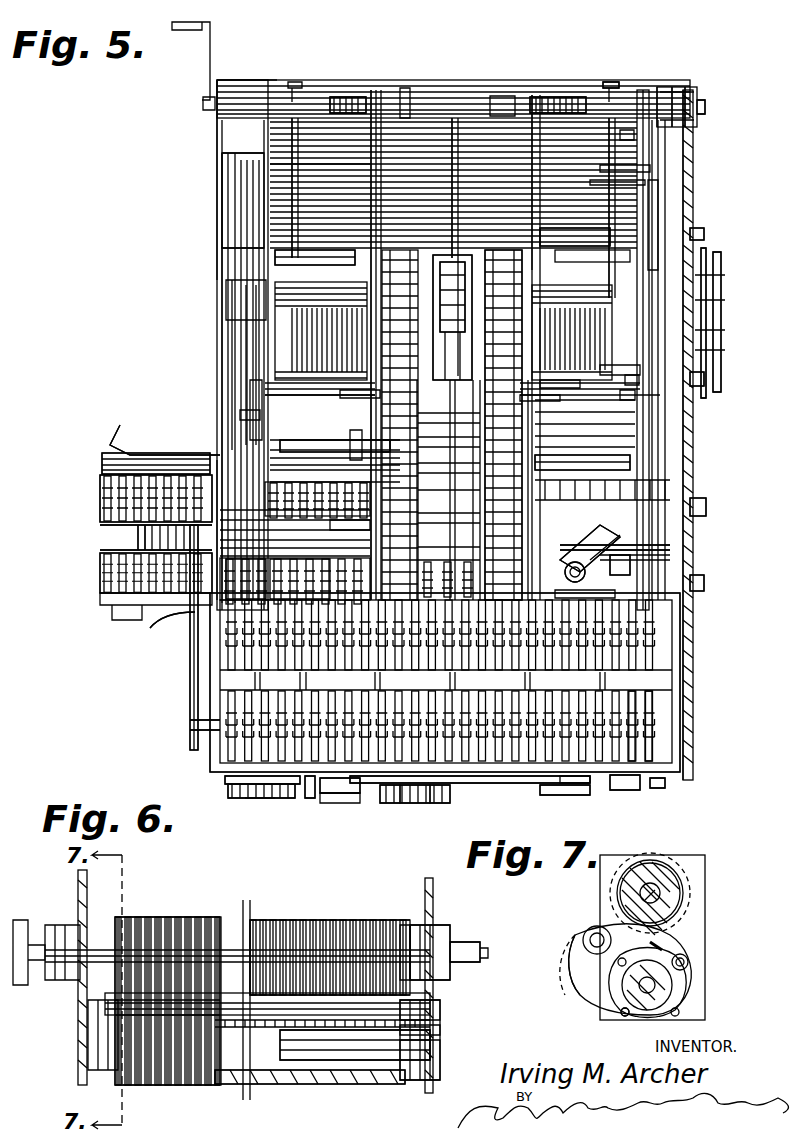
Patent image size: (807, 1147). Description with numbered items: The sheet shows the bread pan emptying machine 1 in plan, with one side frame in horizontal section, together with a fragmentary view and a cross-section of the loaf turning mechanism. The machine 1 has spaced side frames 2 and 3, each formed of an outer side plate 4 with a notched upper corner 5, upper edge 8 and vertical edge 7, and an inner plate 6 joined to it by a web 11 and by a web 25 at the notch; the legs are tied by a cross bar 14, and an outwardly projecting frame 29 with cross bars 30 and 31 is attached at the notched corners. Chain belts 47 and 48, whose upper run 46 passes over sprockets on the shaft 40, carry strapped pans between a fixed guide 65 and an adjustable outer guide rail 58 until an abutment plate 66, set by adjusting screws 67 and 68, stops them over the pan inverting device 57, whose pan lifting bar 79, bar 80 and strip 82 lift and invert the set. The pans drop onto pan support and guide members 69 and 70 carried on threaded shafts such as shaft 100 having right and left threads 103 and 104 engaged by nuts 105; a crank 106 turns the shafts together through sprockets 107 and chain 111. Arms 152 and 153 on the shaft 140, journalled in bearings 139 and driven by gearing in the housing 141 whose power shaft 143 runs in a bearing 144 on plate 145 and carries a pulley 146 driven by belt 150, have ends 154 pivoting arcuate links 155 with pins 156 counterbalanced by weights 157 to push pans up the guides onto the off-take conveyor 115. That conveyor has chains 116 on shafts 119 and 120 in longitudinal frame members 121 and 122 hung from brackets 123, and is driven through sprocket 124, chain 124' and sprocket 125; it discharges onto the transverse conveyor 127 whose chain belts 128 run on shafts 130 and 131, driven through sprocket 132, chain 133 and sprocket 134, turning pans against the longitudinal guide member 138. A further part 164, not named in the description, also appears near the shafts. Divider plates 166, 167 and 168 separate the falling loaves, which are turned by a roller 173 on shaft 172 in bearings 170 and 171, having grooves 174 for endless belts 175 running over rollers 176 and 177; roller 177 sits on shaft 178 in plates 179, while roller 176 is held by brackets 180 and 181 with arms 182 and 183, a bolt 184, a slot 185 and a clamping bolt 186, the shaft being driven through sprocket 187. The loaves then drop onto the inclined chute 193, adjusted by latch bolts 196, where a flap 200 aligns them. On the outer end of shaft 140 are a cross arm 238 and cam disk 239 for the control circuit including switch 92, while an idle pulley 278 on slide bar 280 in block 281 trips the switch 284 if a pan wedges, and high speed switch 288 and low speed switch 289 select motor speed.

In FIG. 5, the machine 1 is at (215, 125).
In FIG. 5, the side frame 2 is at (235, 80).
In FIG. 5, the side frame 3 is at (678, 90).
In FIG. 5, the outer side plate 4 is at (220, 152).
In FIG. 5, the notched upper corner 5 is at (665, 545).
In FIG. 5, the inner plate 6 is at (680, 453).
In FIG. 6, the inner plate 6 is at (80, 877).
In FIG. 5, the vertical edge 7 is at (622, 110).
In FIG. 5, the upper edge 8 is at (215, 198).
In FIG. 5, the web 11 is at (663, 92).
In FIG. 5, the cross bar 14 is at (505, 95).
In FIG. 5, the web 25 is at (220, 470).
In FIG. 5, the outwardly projecting frame 29 is at (678, 770).
In FIG. 5, the cross bar 30 is at (600, 580).
In FIG. 5, the cross bar 31 is at (655, 790).
In FIG. 5, the shaft 40 is at (140, 550).
In FIG. 5, the upper run 46 is at (125, 483).
In FIG. 5, the chain belt 47 is at (100, 497).
In FIG. 5, the chain belt 48 is at (100, 580).
In FIG. 5, the pan inverting device 57 is at (540, 465).
In FIG. 5, the outer guide rail 58 is at (160, 633).
In FIG. 5, the fixed guide 65 is at (125, 455).
In FIG. 5, the abutment plate 66 is at (630, 560).
In FIG. 5, the adjusting screw 67 is at (700, 505).
In FIG. 5, the adjusting screw 68 is at (698, 585).
In FIG. 5, the pan support and guide member 69 is at (378, 95).
In FIG. 5, the pan support and guide member 70 is at (535, 95).
In FIG. 5, the pan lifting bar 79 is at (350, 535).
In FIG. 5, the bar 80 is at (330, 460).
In FIG. 5, the strip 82 is at (357, 440).
In FIG. 5, the switch 92 is at (665, 548).
In FIG. 5, the shaft 100 is at (630, 105).
In FIG. 5, the right thread 103 is at (345, 95).
In FIG. 5, the left thread 104 is at (562, 103).
In FIG. 5, the nut 105 is at (405, 85).
In FIG. 5, the crank 106 is at (210, 70).
In FIG. 5, the sprocket 107 is at (690, 100).
In FIG. 5, the chain 111 is at (688, 95).
In FIG. 5, the off-take conveyor 115 is at (530, 398).
In FIG. 5, the chain 116 is at (330, 525).
In FIG. 5, the shaft 119 is at (250, 560).
In FIG. 5, the shaft 120 is at (525, 275).
In FIG. 5, the longitudinal frame member 121 is at (360, 395).
In FIG. 5, the longitudinal frame member 122 is at (560, 385).
In FIG. 5, the bracket 123 is at (270, 400).
In FIG. 5, the sprocket 124 is at (122, 537).
In FIG. 5, the chain 124' is at (151, 637).
In FIG. 5, the sprocket 125 is at (185, 728).
In FIG. 5, the transverse conveyor 127 is at (655, 735).
In FIG. 5, the chain belt 128 is at (650, 718).
In FIG. 5, the shaft 130 is at (625, 790).
In FIG. 5, the shaft 131 is at (225, 783).
In FIG. 5, the sprocket 132 is at (245, 795).
In FIG. 5, the chain 133 is at (265, 800).
In FIG. 5, the sprocket 134 is at (295, 795).
In FIG. 5, the longitudinal guide member 138 is at (570, 580).
In FIG. 5, the bearing 139 is at (225, 295).
In FIG. 5, the shaft 140 is at (235, 310).
In FIG. 5, the housing 141 is at (455, 265).
In FIG. 5, the power shaft 143 is at (457, 355).
In FIG. 5, the bearing 144 is at (420, 798).
In FIG. 5, the plate 145 is at (440, 805).
In FIG. 5, the pulley 146 is at (385, 800).
In FIG. 5, the belt 150 is at (510, 800).
In FIG. 5, the arm 152 is at (235, 340).
In FIG. 5, the arm 153 is at (630, 370).
In FIG. 5, the oppositely directed end 154 is at (240, 378).
In FIG. 5, the arcuate link 155 is at (660, 205).
In FIG. 5, the pin 156 is at (295, 245).
In FIG. 5, the weight 157 is at (245, 422).
In FIG. 5, the sleeve 164 is at (548, 230).
In FIG. 5, the divider plate 166 is at (278, 105).
In FIG. 5, the divider plate 167 is at (455, 120).
In FIG. 5, the divider plate 168 is at (620, 170).
In FIG. 6, the bearing 170 is at (75, 920).
In FIG. 6, the bearing 171 is at (450, 930).
In FIG. 6, the shaft 172 is at (480, 955).
In FIG. 7, the shaft 172 is at (655, 893).
In FIG. 5, the roller 173 is at (635, 380).
In FIG. 6, the roller 173 is at (405, 920).
In FIG. 7, the roller 173 is at (670, 880).
In FIG. 6, the circumferential groove 174 is at (300, 918).
In FIG. 7, the circumferential groove 174 is at (680, 862).
In FIG. 5, the endless belt 175 is at (630, 395).
In FIG. 6, the endless belt 175 is at (215, 925).
In FIG. 7, the endless belt 175 is at (583, 920).
In FIG. 6, the roller 176 is at (435, 1017).
In FIG. 6, the roller 177 is at (345, 1085).
In FIG. 6, the shaft 178 is at (325, 1085).
In FIG. 6, the plate 179 is at (425, 1055).
In FIG. 6, the bracket 180 is at (95, 1002).
In FIG. 7, the bracket 180 is at (587, 978).
In FIG. 6, the bracket 181 is at (435, 1028).
In FIG. 7, the arm 182 is at (655, 945).
In FIG. 7, the arm 183 is at (598, 1000).
In FIG. 7, the bolt 184 is at (625, 1015).
In FIG. 7, the slot 185 is at (662, 950).
In FIG. 7, the clamping bolt 186 is at (688, 962).
In FIG. 6, the sprocket 187 is at (38, 908).
In FIG. 5, the inclined chute 193 is at (600, 180).
In FIG. 5, the latch bolt 196 is at (625, 130).
In FIG. 5, the flap 200 is at (290, 175).
In FIG. 5, the cross arm 238 is at (717, 275).
In FIG. 5, the cam disk 239 is at (720, 300).
In FIG. 5, the idle pulley 278 is at (578, 793).
In FIG. 5, the slide bar 280 is at (550, 790).
In FIG. 5, the block 281 is at (370, 795).
In FIG. 5, the switch 284 is at (330, 810).
In FIG. 5, the high speed switch 288 is at (700, 375).
In FIG. 5, the low speed switch 289 is at (705, 225).